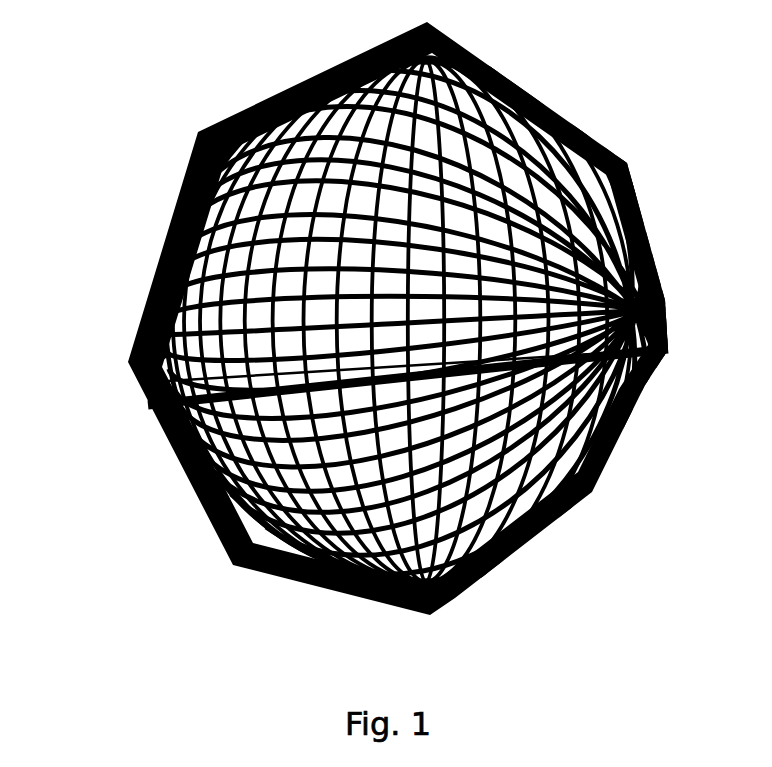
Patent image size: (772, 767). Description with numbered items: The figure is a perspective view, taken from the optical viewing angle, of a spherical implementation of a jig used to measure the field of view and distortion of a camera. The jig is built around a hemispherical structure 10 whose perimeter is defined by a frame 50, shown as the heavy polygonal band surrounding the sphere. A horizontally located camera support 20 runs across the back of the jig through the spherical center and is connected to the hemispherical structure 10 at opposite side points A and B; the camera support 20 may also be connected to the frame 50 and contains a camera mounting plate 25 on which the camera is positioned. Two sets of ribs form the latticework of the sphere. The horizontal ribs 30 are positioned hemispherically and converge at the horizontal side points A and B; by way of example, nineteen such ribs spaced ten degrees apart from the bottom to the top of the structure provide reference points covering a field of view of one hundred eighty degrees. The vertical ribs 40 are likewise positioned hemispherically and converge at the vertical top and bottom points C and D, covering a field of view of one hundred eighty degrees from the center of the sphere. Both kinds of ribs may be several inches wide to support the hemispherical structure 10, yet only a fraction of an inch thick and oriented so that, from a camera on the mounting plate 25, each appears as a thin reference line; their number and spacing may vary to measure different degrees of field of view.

The hemispherical structure 10 is at (153, 68).
The camera support 20 is at (220, 401).
The camera mounting plate 25 is at (418, 385).
The horizontal ribs 30 is at (318, 257).
The vertical ribs 40 is at (480, 217).
The frame 50 is at (592, 487).
The horizontal side point A is at (160, 357).
The horizontal side point B is at (650, 305).
The vertical top point C is at (435, 58).
The vertical bottom point D is at (435, 588).